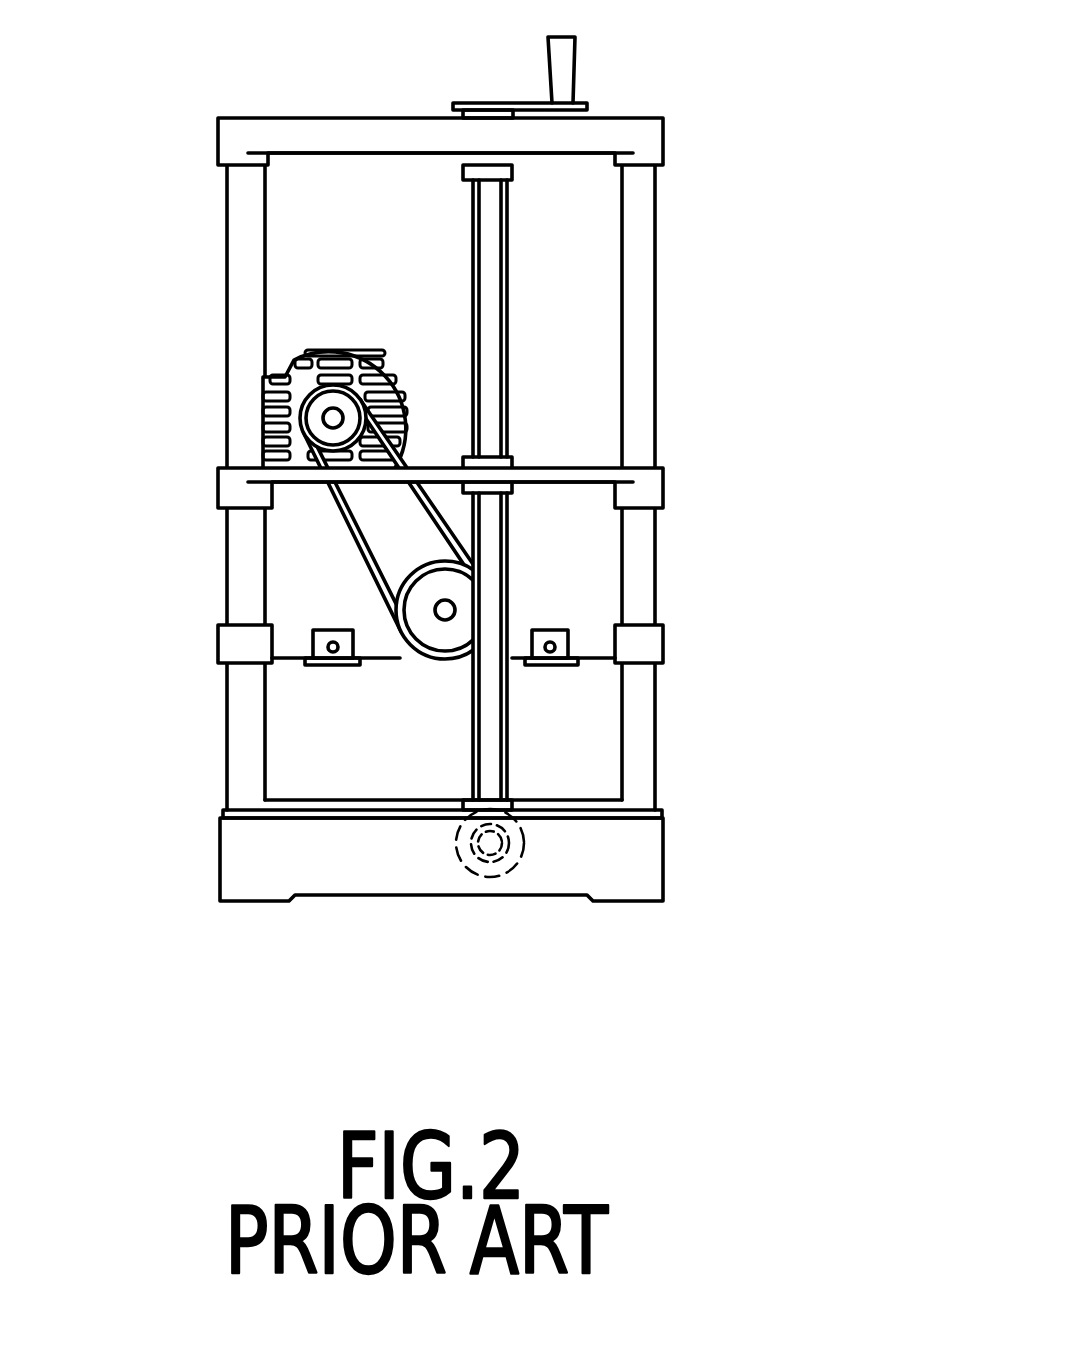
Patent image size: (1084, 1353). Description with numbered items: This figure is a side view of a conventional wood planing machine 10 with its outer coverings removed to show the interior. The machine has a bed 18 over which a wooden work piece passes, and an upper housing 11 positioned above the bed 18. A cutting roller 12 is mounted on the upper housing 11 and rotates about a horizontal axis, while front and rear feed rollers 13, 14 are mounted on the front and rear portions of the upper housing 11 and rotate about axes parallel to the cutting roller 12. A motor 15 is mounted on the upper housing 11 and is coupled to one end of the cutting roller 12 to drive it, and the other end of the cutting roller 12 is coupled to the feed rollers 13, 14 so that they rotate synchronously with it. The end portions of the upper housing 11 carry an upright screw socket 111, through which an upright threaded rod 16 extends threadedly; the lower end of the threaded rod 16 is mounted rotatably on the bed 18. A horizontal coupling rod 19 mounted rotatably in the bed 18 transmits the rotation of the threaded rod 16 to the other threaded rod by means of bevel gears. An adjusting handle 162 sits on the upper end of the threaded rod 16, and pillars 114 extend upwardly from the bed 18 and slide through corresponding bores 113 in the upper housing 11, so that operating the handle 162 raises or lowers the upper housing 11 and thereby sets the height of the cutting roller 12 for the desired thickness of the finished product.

The wood planing machine 10 is at (653, 98).
The upper housing 11 is at (587, 597).
The upright screw socket 111 is at (490, 457).
The bore 113 is at (637, 460).
The pillar 114 is at (638, 227).
The cutting roller 12 is at (445, 610).
The front feed roller 13 is at (304, 662).
The rear feed roller 14 is at (555, 647).
The motor 15 is at (333, 368).
The threaded rod 16 is at (500, 766).
The adjusting handle 162 is at (487, 103).
The bed 18 is at (640, 877).
The horizontal coupling rod 19 is at (490, 847).